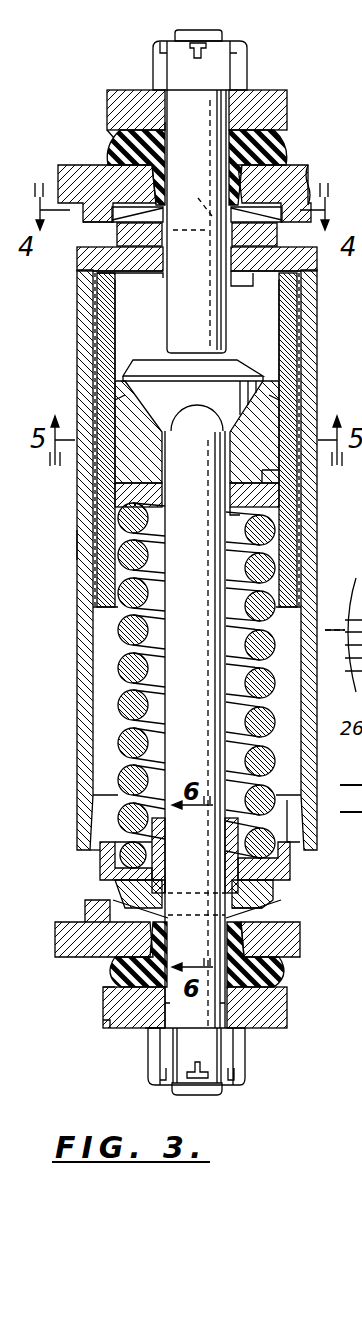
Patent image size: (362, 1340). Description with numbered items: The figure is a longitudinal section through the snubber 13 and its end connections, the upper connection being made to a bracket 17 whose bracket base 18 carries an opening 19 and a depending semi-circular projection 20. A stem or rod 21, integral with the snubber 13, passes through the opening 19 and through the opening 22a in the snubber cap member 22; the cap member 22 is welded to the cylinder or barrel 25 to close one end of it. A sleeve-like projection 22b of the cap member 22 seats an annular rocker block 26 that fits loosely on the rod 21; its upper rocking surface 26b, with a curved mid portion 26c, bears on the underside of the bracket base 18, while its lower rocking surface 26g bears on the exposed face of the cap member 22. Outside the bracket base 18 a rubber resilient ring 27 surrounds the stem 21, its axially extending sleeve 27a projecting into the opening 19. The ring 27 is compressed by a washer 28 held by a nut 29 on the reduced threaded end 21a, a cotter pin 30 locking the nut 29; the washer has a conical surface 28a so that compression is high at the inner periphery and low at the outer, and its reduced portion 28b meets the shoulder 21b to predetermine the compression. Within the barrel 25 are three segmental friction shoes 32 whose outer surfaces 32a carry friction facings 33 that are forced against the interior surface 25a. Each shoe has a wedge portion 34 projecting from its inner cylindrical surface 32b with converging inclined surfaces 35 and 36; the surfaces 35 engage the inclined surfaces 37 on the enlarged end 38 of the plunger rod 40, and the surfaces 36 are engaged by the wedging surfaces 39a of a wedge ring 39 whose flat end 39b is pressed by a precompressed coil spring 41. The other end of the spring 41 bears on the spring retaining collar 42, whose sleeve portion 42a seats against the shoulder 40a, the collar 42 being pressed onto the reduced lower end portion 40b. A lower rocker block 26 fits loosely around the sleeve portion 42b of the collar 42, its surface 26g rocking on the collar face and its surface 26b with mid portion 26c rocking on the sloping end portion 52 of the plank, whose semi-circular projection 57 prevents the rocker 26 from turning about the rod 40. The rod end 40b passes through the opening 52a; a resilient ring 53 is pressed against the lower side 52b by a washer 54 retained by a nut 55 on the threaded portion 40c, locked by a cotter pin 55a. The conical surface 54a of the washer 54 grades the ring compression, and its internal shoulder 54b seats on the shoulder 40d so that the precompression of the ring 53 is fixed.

The snubber 13 is at (77, 545).
The mounting member 17 is at (312, 163).
The bracket base 18 is at (72, 170).
The opening 19 is at (274, 193).
The semi-circular projection 20 is at (120, 233).
The stem or rod 21 is at (228, 313).
The reduced threaded outer end 21a is at (214, 31).
The shoulder 21b is at (201, 225).
The snubber cap member 22 is at (86, 263).
The opening 22a is at (165, 281).
The sleeve-like projection 22b is at (258, 239).
The cylinder or barrel 25 is at (82, 331).
The interior surface 25a is at (97, 621).
The rocker block 26 is at (118, 241).
The upper rocking surface 26b is at (243, 214).
The mid portion 26c is at (196, 554).
The lower rocking surface 26g is at (248, 273).
The resilient ring 27 is at (287, 151).
The axially extending sleeve 27a is at (152, 188).
The washer 28 is at (283, 101).
The conical surface 28a is at (127, 131).
The reduced portion 28b is at (207, 128).
The nut 29 is at (240, 63).
The cotter pin 30 is at (190, 50).
The friction shoes 32 is at (107, 359).
The outer surfaces 32a is at (103, 593).
The inner cylindrical surface 32b is at (276, 325).
The friction facings 33 is at (105, 568).
The wedge portion 34 is at (120, 406).
The inclined surface 35 is at (120, 385).
The inclined surface 36 is at (112, 498).
The flat inclined surfaces 37 is at (190, 401).
The enlarged end 38 is at (166, 378).
The wedge ring 39 is at (256, 504).
The wedging surfaces 39a is at (245, 469).
The flat end 39b is at (232, 518).
The plunger rod 40 is at (205, 625).
The shoulder 40a is at (170, 807).
The reduced lower end portion 40b is at (168, 863).
The threaded portion 40c is at (178, 1096).
The shoulder 40d is at (195, 1006).
The coil spring 41 is at (125, 666).
The spring retaining collar 42 is at (290, 859).
The sleeve portion 42a is at (300, 819).
The sleeve portion 42b is at (115, 891).
The sloping end portion 52 is at (56, 950).
The opening 52a is at (290, 929).
The lower side 52b is at (110, 986).
The resilient ring 53 is at (276, 969).
The washer 54 is at (290, 1001).
The conical surface 54a is at (106, 1012).
The internal shoulder 54b is at (146, 1030).
The nut 55 is at (236, 1061).
The cotter pin 55a is at (205, 1092).
The semi-circular projection 57 is at (95, 916).